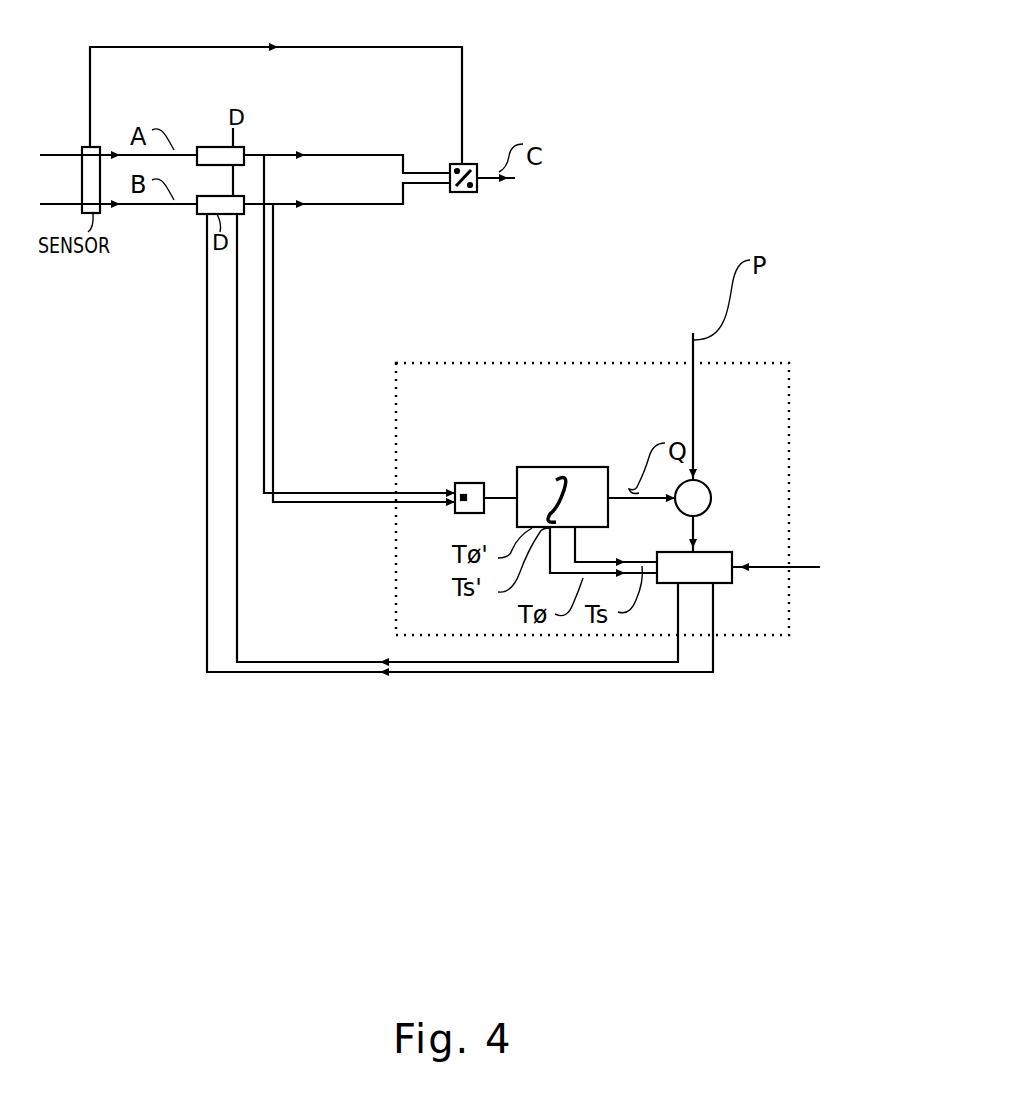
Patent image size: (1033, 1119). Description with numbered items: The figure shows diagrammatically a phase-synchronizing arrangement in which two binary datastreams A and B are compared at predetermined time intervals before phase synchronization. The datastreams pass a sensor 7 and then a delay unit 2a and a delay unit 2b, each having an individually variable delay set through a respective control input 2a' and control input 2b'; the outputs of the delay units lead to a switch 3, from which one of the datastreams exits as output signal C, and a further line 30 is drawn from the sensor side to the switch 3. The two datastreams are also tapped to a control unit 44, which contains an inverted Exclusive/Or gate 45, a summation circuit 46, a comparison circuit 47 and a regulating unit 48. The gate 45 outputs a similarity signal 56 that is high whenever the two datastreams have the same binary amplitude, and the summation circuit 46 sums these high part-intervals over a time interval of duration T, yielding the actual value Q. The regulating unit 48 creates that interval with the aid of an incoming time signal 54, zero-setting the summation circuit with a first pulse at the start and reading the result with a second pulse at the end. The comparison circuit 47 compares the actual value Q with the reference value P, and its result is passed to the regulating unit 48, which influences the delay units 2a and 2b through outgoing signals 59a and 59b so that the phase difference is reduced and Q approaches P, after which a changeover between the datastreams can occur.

The sensor 7 is at (82, 156).
The bypass line 30 is at (252, 46).
The delay unit 2a is at (211, 141).
The delay unit 2b is at (211, 191).
The control input 2a' is at (350, 300).
The control input 2b' is at (279, 355).
The switch 3 is at (473, 168).
The control unit 44 is at (548, 363).
The inverted Exclusive/Or gate 45 is at (446, 480).
The similarity signal 56 is at (507, 506).
The summation circuit 46 is at (612, 477).
The comparison circuit 47 is at (711, 502).
The regulating unit 48 is at (678, 585).
The time signal 54 is at (790, 576).
The outgoing signal 59a is at (352, 662).
The outgoing signal 59b is at (356, 672).